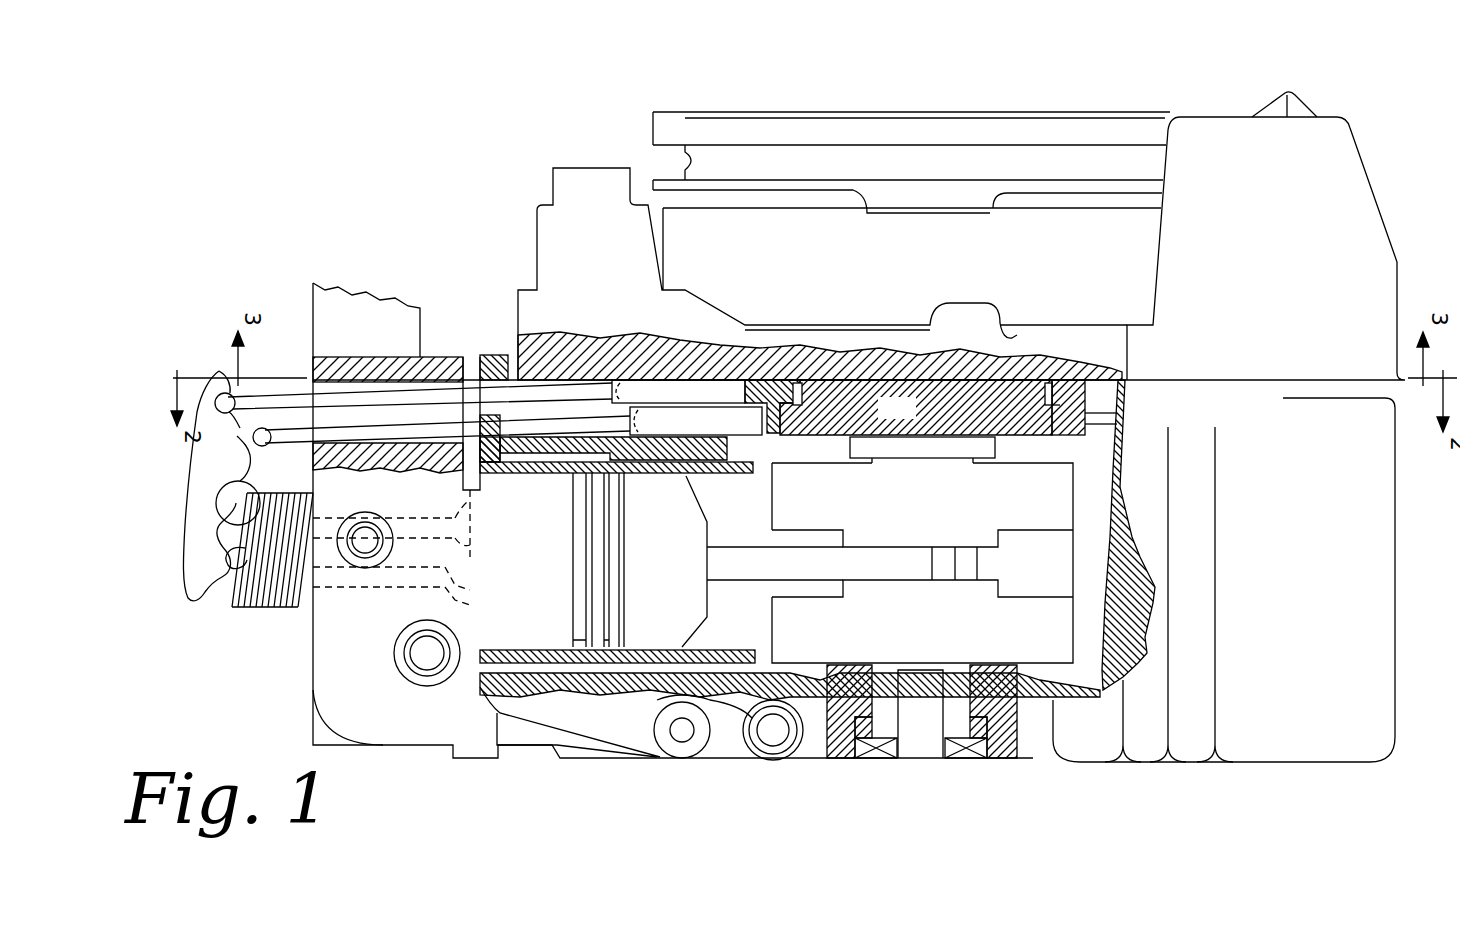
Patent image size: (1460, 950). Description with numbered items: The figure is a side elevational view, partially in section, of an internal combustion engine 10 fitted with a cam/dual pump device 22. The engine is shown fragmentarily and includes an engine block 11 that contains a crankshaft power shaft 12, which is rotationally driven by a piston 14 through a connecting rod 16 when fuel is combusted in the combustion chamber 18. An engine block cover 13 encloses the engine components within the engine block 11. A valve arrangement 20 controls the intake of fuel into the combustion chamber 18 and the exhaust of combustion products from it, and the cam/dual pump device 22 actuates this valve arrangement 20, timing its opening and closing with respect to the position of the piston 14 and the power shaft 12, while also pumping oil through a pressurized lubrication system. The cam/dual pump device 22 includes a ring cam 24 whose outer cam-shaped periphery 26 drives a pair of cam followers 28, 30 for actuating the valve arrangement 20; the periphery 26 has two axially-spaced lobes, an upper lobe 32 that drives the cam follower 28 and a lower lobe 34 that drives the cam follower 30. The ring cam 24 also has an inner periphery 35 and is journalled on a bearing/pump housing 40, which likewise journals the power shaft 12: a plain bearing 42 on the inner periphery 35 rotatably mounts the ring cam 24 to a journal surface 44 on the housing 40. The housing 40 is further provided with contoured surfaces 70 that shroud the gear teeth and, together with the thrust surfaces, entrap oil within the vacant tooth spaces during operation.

The internal combustion engine 10 is at (1056, 93).
The engine block 11 is at (832, 746).
The crankshaft power shaft 12 is at (937, 735).
The engine block cover 13 is at (518, 322).
The piston 14 is at (645, 606).
The connecting rod 16 is at (750, 581).
The combustion chamber 18 is at (528, 601).
The valve arrangement 20 is at (244, 647).
The cam/dual pump device 22 is at (765, 378).
The ring cam 24 is at (1076, 438).
The outer cam-shaped periphery 26 is at (1117, 413).
The cam follower 28 is at (652, 401).
The cam follower 30 is at (670, 429).
The upper lobe 32 is at (1121, 388).
The lower lobe 34 is at (1117, 424).
The inner periphery 35 is at (1040, 434).
The bearing/pump housing 40 is at (916, 421).
The plain bearing 42 is at (1056, 408).
The journal surface 44 is at (620, 455).
The contoured surfaces 70 is at (767, 365).